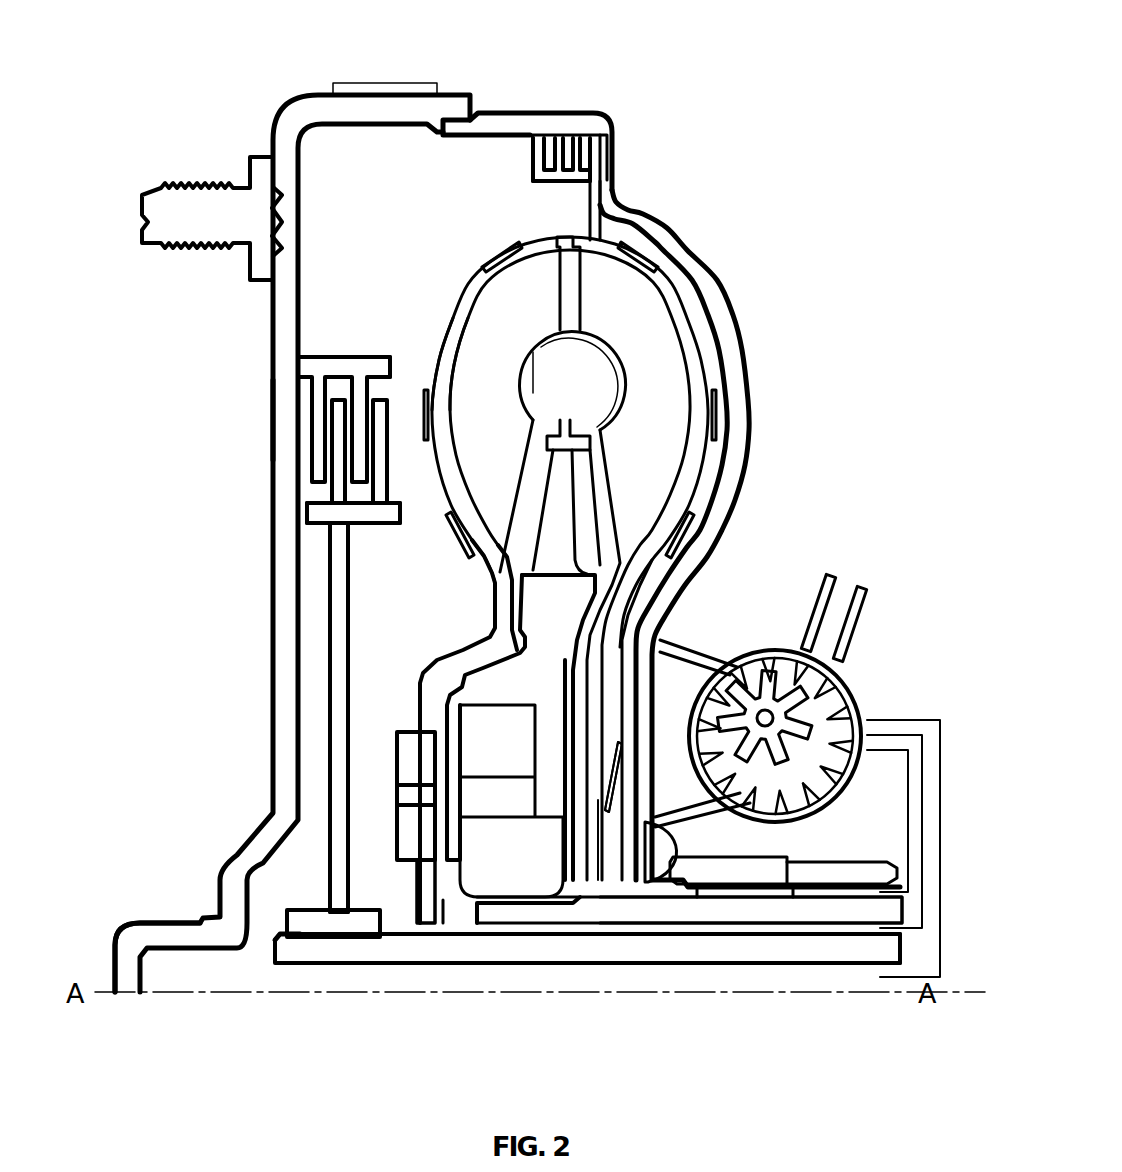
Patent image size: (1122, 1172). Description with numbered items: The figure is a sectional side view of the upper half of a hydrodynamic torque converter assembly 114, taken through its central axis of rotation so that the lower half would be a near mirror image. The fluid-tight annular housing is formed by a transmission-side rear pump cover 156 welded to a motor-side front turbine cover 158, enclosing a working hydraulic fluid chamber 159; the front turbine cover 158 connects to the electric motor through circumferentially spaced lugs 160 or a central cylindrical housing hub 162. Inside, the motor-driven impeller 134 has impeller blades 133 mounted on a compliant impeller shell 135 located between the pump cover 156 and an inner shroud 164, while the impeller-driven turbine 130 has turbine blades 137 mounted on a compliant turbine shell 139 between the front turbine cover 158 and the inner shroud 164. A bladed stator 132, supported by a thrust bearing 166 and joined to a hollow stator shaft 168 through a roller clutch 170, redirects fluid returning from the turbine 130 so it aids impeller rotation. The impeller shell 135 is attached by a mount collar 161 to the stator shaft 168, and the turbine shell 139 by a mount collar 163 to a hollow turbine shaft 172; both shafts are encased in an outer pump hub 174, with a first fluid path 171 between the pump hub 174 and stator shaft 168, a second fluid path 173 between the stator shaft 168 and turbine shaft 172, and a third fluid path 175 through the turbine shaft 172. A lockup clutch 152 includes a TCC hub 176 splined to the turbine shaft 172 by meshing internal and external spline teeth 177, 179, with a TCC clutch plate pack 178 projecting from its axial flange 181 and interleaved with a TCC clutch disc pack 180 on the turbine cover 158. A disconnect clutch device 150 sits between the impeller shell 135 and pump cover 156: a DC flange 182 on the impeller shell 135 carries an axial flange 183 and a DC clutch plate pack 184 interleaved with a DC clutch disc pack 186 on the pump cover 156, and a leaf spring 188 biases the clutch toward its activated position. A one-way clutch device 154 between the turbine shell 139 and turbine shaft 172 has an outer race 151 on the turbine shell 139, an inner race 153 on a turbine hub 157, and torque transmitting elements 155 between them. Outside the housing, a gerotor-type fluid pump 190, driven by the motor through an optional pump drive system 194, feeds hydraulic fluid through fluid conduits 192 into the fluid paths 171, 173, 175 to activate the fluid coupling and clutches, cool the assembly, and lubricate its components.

The torque converter assembly 114 is at (840, 37).
The turbine 130 is at (438, 236).
The stator 132 is at (598, 620).
The impeller blades 133 is at (650, 337).
The impeller 134 is at (724, 356).
The impeller shell 135 is at (667, 277).
The turbine blades 137 is at (497, 310).
The turbine shell 139 is at (490, 255).
The disconnect clutch device 150 is at (605, 115).
The outer race 151 is at (395, 745).
The lockup clutch 152 is at (322, 352).
The inner race 153 is at (395, 832).
The one-way clutch device 154 is at (350, 795).
The torque transmitting elements 155 is at (395, 790).
The pump cover 156 is at (750, 393).
The turbine hub 157 is at (413, 880).
The front turbine cover 158 is at (298, 362).
The working hydraulic fluid chamber 159 is at (463, 140).
The lugs 160 is at (155, 203).
The mount collar 161 is at (607, 830).
The housing hub 162 is at (157, 935).
The mount collar 163 is at (420, 938).
The inner shroud 164 is at (621, 388).
The thrust bearing 166 is at (455, 720).
The stator shaft 168 is at (742, 912).
The roller clutch 170 is at (465, 742).
The first fluid path 171 is at (835, 890).
The turbine shaft 172 is at (640, 948).
The second fluid path 173 is at (693, 927).
The pump hub 174 is at (777, 873).
The third fluid path 175 is at (885, 985).
The TCC hub 176 is at (330, 590).
The internal spline teeth 177 is at (333, 938).
The TCC clutch plate pack 178 is at (300, 490).
The external spline teeth 179 is at (260, 938).
The TCC clutch disc pack 180 is at (272, 420).
The axial flange 181 is at (308, 508).
The DC flange 182 is at (593, 193).
The axial flange 183 is at (593, 177).
The DC clutch plate pack 184 is at (600, 143).
The DC clutch disc pack 186 is at (518, 132).
The leaf spring 188 is at (660, 817).
The fluid pump 190 is at (880, 670).
The fluid conduits 192 is at (930, 707).
The pump drive system 194 is at (857, 568).